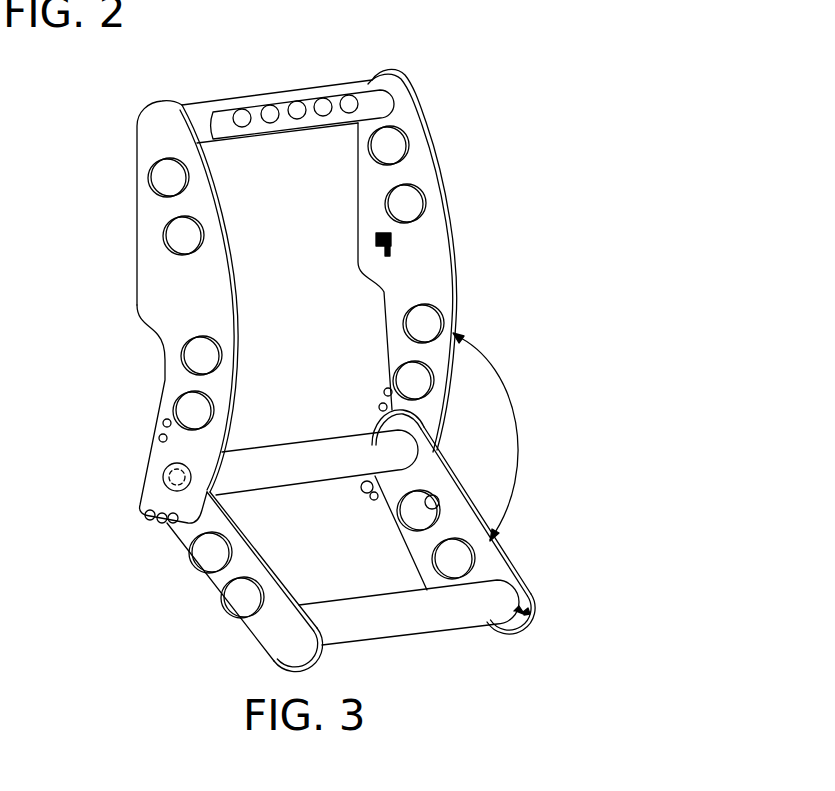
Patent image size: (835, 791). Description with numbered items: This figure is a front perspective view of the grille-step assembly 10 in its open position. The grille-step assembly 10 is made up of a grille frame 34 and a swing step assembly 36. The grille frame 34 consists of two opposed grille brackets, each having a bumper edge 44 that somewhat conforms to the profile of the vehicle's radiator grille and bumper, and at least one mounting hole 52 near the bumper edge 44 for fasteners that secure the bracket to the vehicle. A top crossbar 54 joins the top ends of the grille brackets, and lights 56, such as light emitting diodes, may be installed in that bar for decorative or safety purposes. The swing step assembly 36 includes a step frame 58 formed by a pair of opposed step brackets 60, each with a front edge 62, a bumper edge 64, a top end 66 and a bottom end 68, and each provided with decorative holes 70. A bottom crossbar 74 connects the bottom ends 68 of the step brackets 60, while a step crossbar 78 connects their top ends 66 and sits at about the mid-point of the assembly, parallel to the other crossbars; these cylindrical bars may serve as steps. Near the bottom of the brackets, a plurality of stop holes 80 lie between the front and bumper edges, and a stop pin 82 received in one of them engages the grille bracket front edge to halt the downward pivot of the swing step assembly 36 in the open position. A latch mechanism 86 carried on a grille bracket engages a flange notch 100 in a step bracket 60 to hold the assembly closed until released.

The grille-step assembly 10 is at (425, 62).
The grille frame 34 is at (447, 127).
The swing step assembly 36 is at (537, 457).
The bumper edge 44 is at (137, 214).
The mounting hole 52 is at (164, 422).
The top crossbar 54 is at (236, 103).
The lights 56 is at (300, 111).
The step frame 58 is at (507, 543).
The step bracket 60 is at (190, 586).
The front edge 62 is at (218, 622).
The bumper edge 64 is at (230, 524).
The top end 66 is at (307, 655).
The bottom end 68 is at (381, 412).
The decorative holes 70 is at (436, 506).
The bottom crossbar 74 is at (274, 450).
The step crossbar 78 is at (343, 617).
The stop holes 80 is at (147, 514).
The stop pin 82 is at (158, 520).
The latch mechanism 86 is at (407, 236).
The flange notch 100 is at (520, 612).